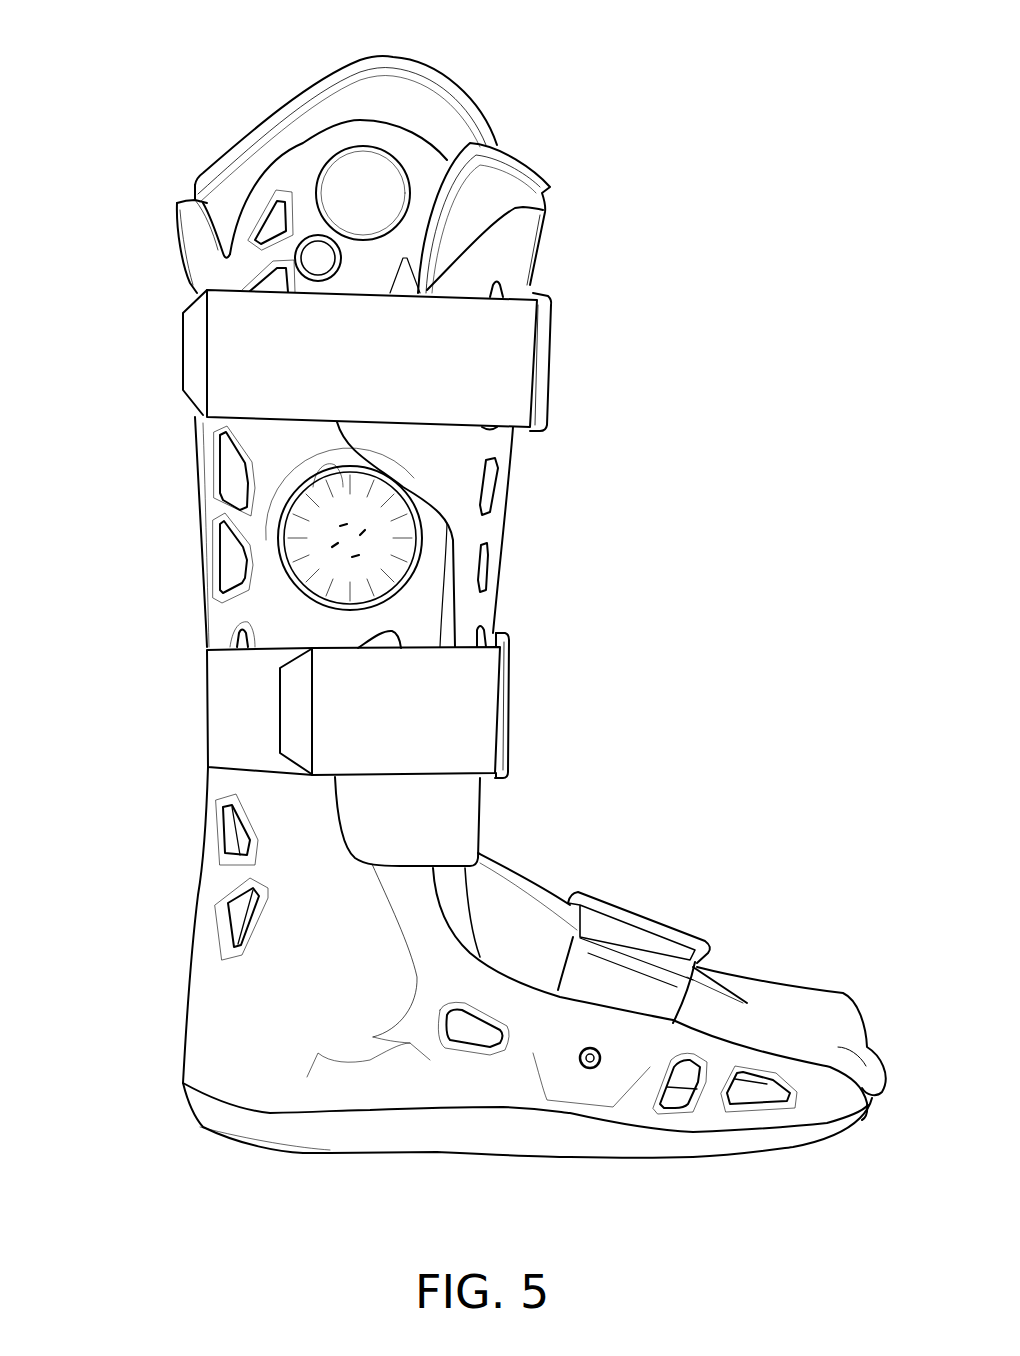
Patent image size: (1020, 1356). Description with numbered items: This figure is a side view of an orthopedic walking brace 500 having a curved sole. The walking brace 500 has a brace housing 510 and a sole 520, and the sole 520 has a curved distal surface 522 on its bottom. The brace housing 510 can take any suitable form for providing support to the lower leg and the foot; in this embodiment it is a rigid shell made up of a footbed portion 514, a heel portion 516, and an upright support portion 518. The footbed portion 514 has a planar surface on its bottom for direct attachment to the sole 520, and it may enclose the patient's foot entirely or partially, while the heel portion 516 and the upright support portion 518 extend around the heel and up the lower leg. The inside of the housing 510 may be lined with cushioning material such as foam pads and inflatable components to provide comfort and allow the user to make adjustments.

The orthopedic walking brace 500 is at (473, 21).
The brace housing 510 is at (692, 624).
The footbed portion 514 is at (762, 950).
The heel portion 516 is at (145, 1023).
The upright support portion 518 is at (152, 574).
The sole 520 is at (475, 1182).
The curved distal surface 522 is at (631, 1158).